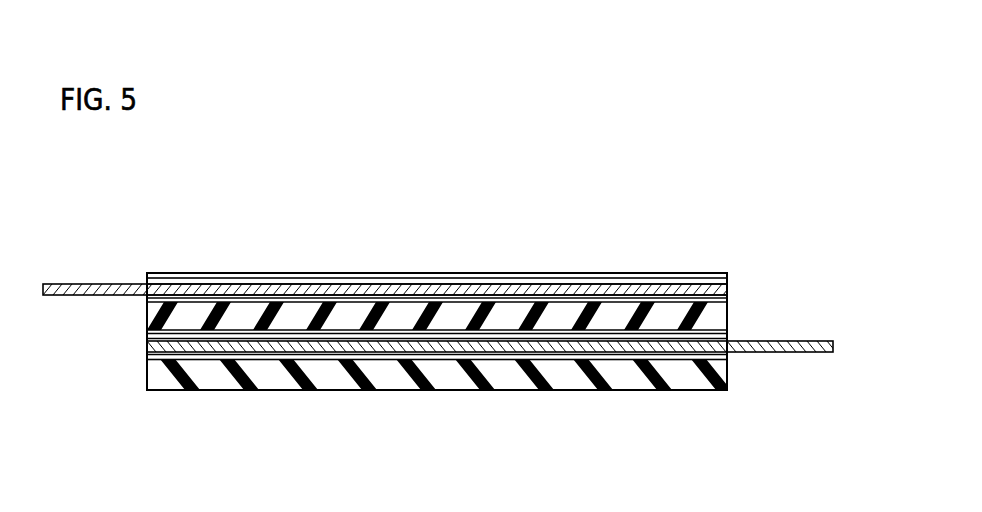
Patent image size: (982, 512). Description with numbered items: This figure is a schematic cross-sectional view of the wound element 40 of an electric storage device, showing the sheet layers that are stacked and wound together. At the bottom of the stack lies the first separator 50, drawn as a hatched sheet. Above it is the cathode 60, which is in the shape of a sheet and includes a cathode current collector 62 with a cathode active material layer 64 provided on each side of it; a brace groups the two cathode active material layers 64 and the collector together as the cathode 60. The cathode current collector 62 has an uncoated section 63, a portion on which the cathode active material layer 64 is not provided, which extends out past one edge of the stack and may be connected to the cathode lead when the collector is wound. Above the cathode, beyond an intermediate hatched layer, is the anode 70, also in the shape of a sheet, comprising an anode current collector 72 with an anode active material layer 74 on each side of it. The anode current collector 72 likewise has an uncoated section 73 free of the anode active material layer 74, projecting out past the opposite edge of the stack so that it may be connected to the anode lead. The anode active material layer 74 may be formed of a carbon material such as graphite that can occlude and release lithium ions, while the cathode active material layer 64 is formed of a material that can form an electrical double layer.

The wound element 40 is at (439, 314).
The first separator 50 is at (368, 376).
The cathode 60 is at (467, 371).
The cathode current collector 62 is at (507, 347).
The uncoated section 63 is at (797, 350).
The cathode active material layer 64 is at (720, 337).
The anode 70 is at (413, 267).
The anode current collector 72 is at (445, 285).
The uncoated section 73 is at (69, 284).
The anode active material layer 74 is at (146, 276).